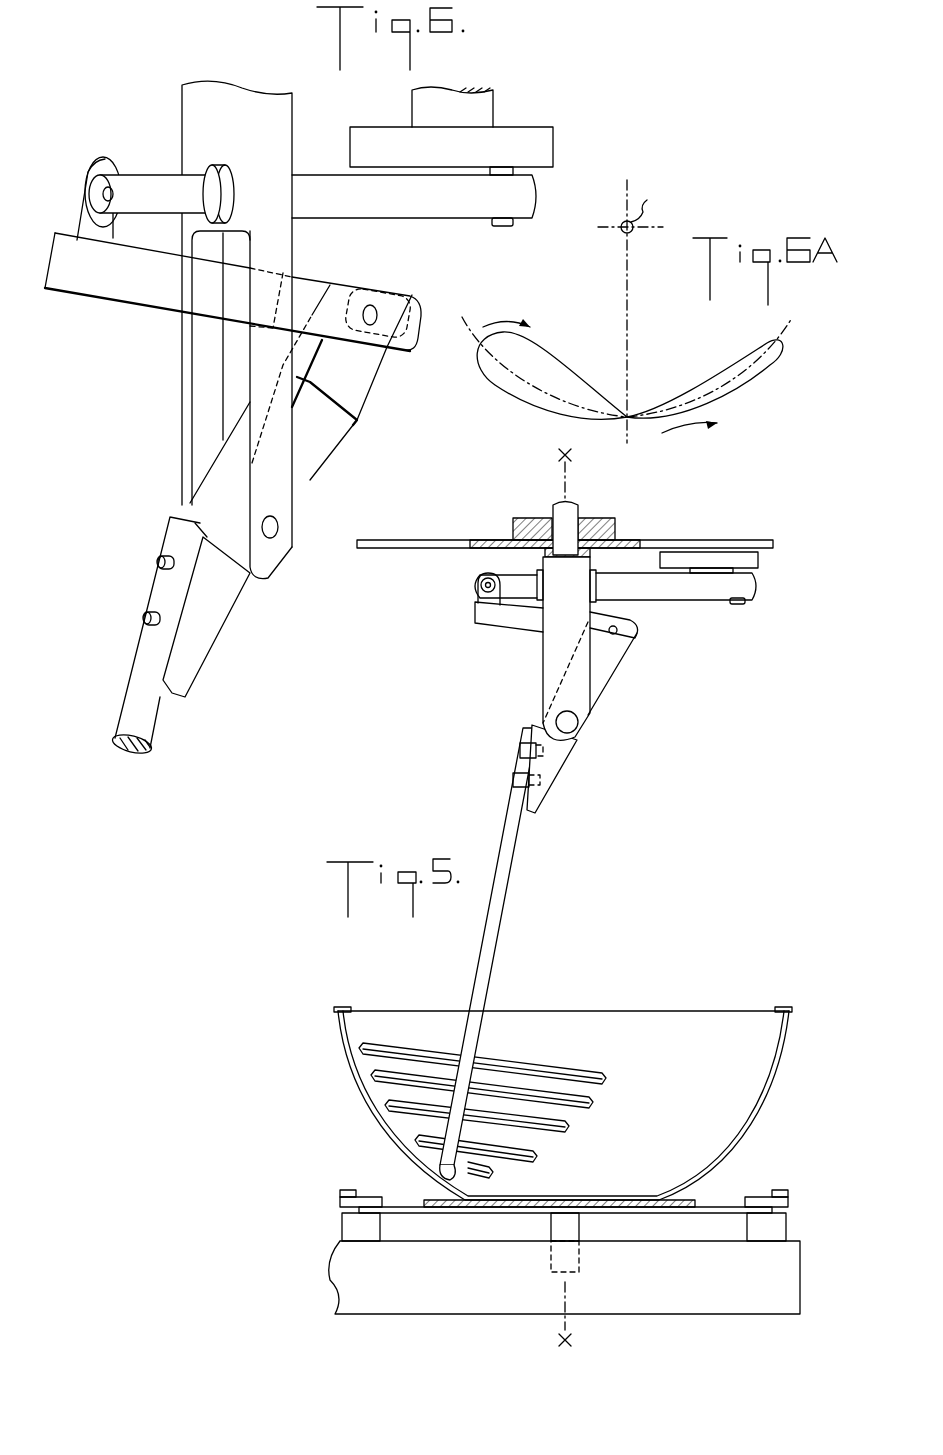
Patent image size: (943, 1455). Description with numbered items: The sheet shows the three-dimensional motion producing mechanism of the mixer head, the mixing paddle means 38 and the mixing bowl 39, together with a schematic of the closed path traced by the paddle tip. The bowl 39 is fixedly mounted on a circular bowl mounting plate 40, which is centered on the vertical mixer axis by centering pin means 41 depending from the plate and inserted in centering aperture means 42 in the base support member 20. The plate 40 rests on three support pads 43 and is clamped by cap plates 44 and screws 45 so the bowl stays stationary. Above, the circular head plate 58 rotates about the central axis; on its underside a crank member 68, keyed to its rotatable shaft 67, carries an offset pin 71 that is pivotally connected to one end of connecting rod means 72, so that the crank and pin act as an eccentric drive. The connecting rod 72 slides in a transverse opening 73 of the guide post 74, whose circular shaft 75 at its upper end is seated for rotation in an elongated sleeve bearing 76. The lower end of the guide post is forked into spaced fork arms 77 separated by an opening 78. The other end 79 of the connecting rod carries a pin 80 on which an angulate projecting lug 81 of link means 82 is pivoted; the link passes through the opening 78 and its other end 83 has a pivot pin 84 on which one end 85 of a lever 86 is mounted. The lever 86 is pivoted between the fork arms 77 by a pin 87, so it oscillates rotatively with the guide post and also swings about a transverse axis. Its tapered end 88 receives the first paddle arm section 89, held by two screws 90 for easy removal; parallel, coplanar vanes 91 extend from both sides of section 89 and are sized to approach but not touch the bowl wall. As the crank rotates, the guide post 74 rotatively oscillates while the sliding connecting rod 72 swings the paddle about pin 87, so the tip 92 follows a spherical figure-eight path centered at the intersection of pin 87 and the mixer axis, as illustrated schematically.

In FIG. 5, the base support member 20 is at (354, 1269).
In FIG. 5, the mixing paddle means 38 is at (468, 1040).
In FIG. 5, the mixing bowl 39 is at (777, 1048).
In FIG. 5, the bowl mounting plate 40 is at (705, 1207).
In FIG. 5, the centering pin means 41 is at (577, 1222).
In FIG. 5, the centering aperture means 42 is at (582, 1258).
In FIG. 5, the support pads 43 is at (358, 1228).
In FIG. 5, the cap plates 44 is at (340, 1200).
In FIG. 5, the screws 45 is at (340, 1190).
In FIG. 5, the head plate 58 is at (400, 540).
In FIG. 6, the rotatable shaft 67 is at (483, 113).
In FIG. 6, the crank member 68 is at (548, 147).
In FIG. 5, the crank member 68 is at (743, 562).
In FIG. 6, the pin 71 is at (500, 222).
In FIG. 5, the pin 71 is at (740, 604).
In FIG. 6, the connecting rod means 72 is at (407, 195).
In FIG. 5, the connecting rod means 72 is at (692, 587).
In FIG. 6, the opening 73 is at (226, 167).
In FIG. 5, the opening 73 is at (596, 567).
In FIG. 6, the guide post 74 is at (280, 126).
In FIG. 5, the guide post 74 is at (544, 650).
In FIG. 5, the circular shaft 75 is at (572, 508).
In FIG. 5, the sleeve bearing 76 is at (590, 518).
In FIG. 6, the fork arms 77 is at (187, 417).
In FIG. 5, the fork arms 77 is at (547, 683).
In FIG. 6, the opening 78 is at (237, 343).
In FIG. 6, the other end of connecting rod 79 is at (158, 185).
In FIG. 5, the other end of connecting rod 79 is at (510, 577).
In FIG. 6, the pin 80 is at (103, 193).
In FIG. 5, the pin 80 is at (486, 591).
In FIG. 6, the angulate projecting lug 81 is at (98, 170).
In FIG. 6, the link means 82 is at (143, 276).
In FIG. 5, the link means 82 is at (511, 615).
In FIG. 6, the other end of link 83 is at (312, 287).
In FIG. 6, the pivot pin 84 is at (377, 313).
In FIG. 5, the pivot pin 84 is at (620, 628).
In FIG. 6, the one end of lever 85 is at (347, 378).
In FIG. 6, the lever 86 is at (316, 443).
In FIG. 5, the lever 86 is at (600, 673).
In FIG. 6, the pin 87 is at (279, 524).
In FIG. 6A, the pin 87 is at (680, 311).
In FIG. 5, the pin 87 is at (579, 722).
In FIG. 6, the tapered end 88 is at (223, 597).
In FIG. 5, the tapered end 88 is at (553, 770).
In FIG. 6, the first paddle arm section 89 is at (152, 723).
In FIG. 5, the first paddle arm section 89 is at (510, 887).
In FIG. 6, the screws 90 is at (145, 618).
In FIG. 5, the screws 90 is at (513, 780).
In FIG. 5, the vanes 91 is at (388, 1040).
In FIG. 5, the tip 92 is at (442, 1182).